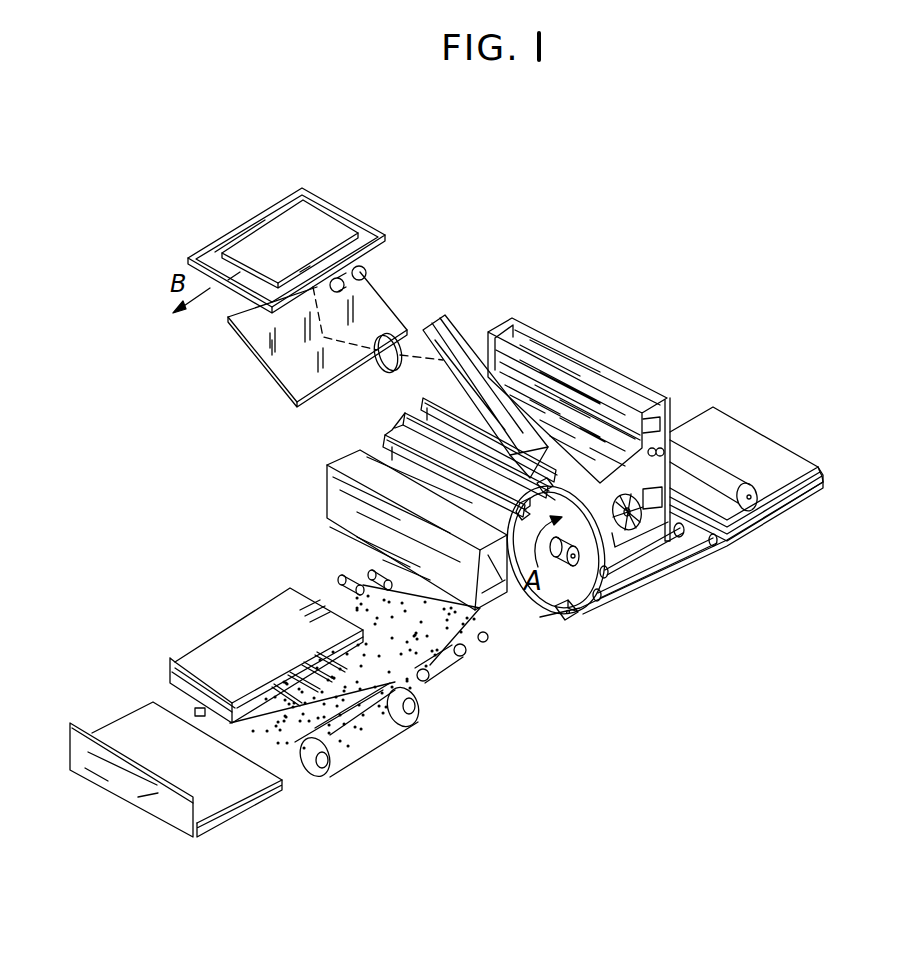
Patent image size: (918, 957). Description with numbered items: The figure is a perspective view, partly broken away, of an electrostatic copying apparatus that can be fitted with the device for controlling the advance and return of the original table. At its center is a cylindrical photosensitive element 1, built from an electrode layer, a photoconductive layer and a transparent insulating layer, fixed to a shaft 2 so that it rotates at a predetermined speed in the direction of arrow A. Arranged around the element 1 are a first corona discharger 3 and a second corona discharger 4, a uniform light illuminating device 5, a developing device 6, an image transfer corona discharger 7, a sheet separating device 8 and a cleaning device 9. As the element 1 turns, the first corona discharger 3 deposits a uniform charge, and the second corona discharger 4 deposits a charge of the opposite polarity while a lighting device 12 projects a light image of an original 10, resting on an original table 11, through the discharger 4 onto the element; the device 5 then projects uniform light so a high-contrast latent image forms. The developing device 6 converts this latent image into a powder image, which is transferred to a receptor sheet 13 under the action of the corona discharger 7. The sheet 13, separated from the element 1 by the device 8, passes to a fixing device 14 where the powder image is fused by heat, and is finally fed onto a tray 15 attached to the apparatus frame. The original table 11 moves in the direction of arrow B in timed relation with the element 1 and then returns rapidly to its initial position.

The cylindrical photosensitive element 1 is at (545, 613).
The shaft 2 is at (571, 560).
The first corona discharger 3 is at (390, 440).
The second corona discharger 4 is at (543, 480).
The uniform light illuminating device 5 is at (557, 467).
The developing device 6 is at (645, 367).
The image transfer corona discharger 7 is at (572, 620).
The sheet separating device 8 is at (513, 610).
The cleaning device 9 is at (313, 470).
The original 10 is at (308, 228).
The original table 11 is at (367, 238).
The lighting device 12 is at (450, 280).
The receptor sheet 13 is at (745, 457).
The fixing device 14 is at (265, 632).
The tray 15 is at (232, 812).